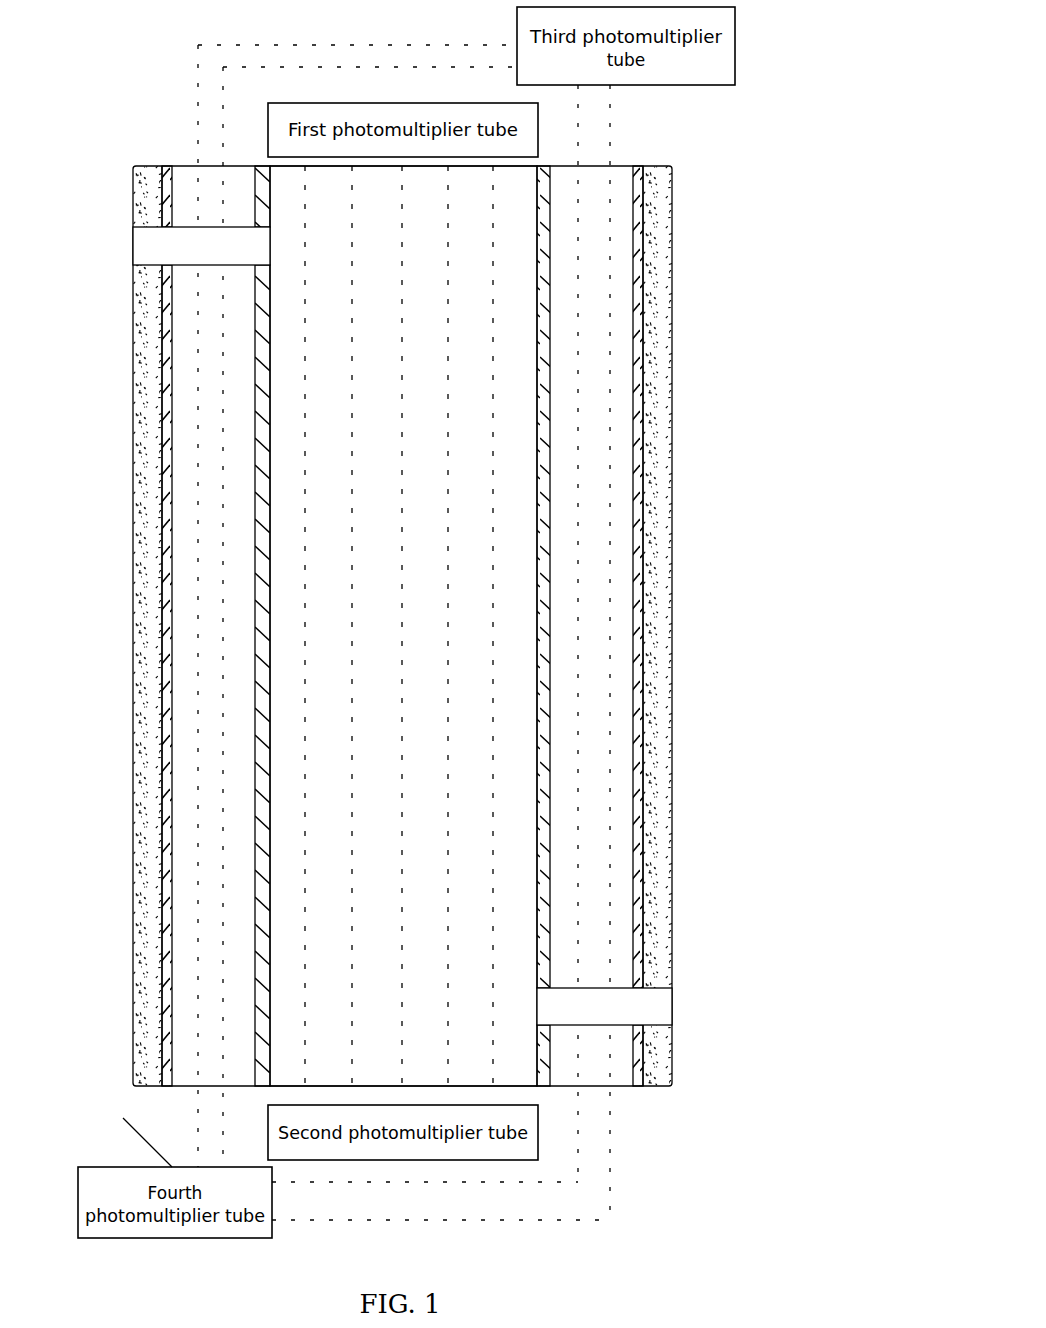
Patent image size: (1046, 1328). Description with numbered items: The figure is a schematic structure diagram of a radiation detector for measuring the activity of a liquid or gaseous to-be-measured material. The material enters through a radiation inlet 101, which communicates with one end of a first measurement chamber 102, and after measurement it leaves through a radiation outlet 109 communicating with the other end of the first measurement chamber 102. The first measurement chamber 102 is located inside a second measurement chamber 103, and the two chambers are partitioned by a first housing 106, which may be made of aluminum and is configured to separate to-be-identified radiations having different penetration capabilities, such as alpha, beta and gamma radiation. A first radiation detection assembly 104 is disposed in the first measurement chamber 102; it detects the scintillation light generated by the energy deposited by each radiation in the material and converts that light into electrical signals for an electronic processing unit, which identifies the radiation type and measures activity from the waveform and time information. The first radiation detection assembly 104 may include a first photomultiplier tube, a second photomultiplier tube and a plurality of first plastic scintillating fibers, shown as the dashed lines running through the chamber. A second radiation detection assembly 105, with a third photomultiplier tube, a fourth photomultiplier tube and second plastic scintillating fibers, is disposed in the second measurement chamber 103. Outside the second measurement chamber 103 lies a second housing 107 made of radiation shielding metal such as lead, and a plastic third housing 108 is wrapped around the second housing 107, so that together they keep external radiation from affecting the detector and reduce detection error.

The radiation inlet 101 is at (148, 250).
The first measurement chamber 102 is at (287, 842).
The second measurement chamber 103 is at (620, 422).
The first radiation detection assembly 104 is at (493, 258).
The second radiation detection assembly 105 is at (193, 1058).
The first housing 106 is at (263, 186).
The second housing 107 is at (160, 570).
The third housing 108 is at (145, 352).
The radiation outlet 109 is at (658, 1008).